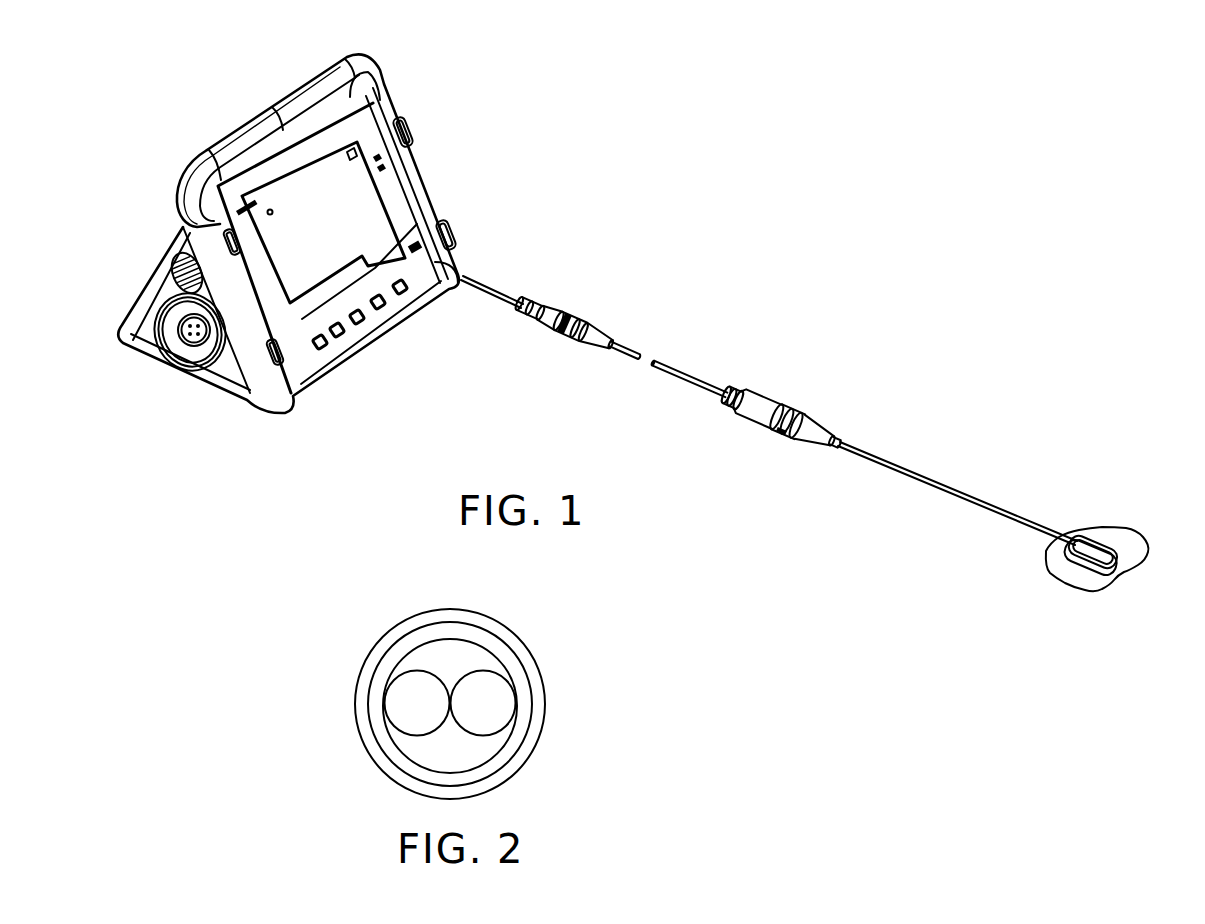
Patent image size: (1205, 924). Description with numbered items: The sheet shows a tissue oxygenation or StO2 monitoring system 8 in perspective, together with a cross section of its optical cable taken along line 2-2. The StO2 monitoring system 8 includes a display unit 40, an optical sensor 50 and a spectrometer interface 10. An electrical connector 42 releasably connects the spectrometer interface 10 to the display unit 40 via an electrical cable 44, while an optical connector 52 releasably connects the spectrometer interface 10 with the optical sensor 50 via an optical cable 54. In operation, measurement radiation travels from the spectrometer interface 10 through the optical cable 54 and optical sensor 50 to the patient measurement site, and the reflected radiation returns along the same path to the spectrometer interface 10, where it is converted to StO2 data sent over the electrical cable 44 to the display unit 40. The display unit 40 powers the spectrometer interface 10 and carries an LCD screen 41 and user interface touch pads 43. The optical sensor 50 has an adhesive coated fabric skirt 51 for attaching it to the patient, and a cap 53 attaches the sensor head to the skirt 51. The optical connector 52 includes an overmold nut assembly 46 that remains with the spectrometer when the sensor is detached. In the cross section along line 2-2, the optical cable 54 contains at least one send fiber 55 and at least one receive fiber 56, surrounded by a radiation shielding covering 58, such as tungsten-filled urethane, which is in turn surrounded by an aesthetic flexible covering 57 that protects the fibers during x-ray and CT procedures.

In FIG. 1, the StO2 monitoring system 8 is at (630, 195).
In FIG. 1, the spectrometer interface 10 is at (759, 360).
In FIG. 1, the display unit 40 is at (330, 232).
In FIG. 1, the LCD screen 41 is at (365, 215).
In FIG. 1, the electrical connector 42 is at (567, 323).
In FIG. 1, the user interface touch pads 43 is at (323, 343).
In FIG. 1, the electrical cable 44 is at (482, 292).
In FIG. 1, the overmold nut assembly 46 is at (790, 404).
In FIG. 1, the optical sensor 50 is at (1047, 505).
In FIG. 1, the skirt 51 is at (1057, 573).
In FIG. 1, the optical connector 52 is at (783, 458).
In FIG. 1, the cap 53 is at (1092, 535).
In FIG. 1, the optical cable 54 is at (888, 425).
In FIG. 2, the optical cable 54 is at (414, 696).
In FIG. 2, the send fiber 55 is at (500, 725).
In FIG. 2, the receive fiber 56 is at (413, 733).
In FIG. 2, the flexible covering 57 is at (522, 641).
In FIG. 2, the radiation shielding covering 58 is at (400, 645).
In FIG. 1, the line 2- 2 is at (847, 510).